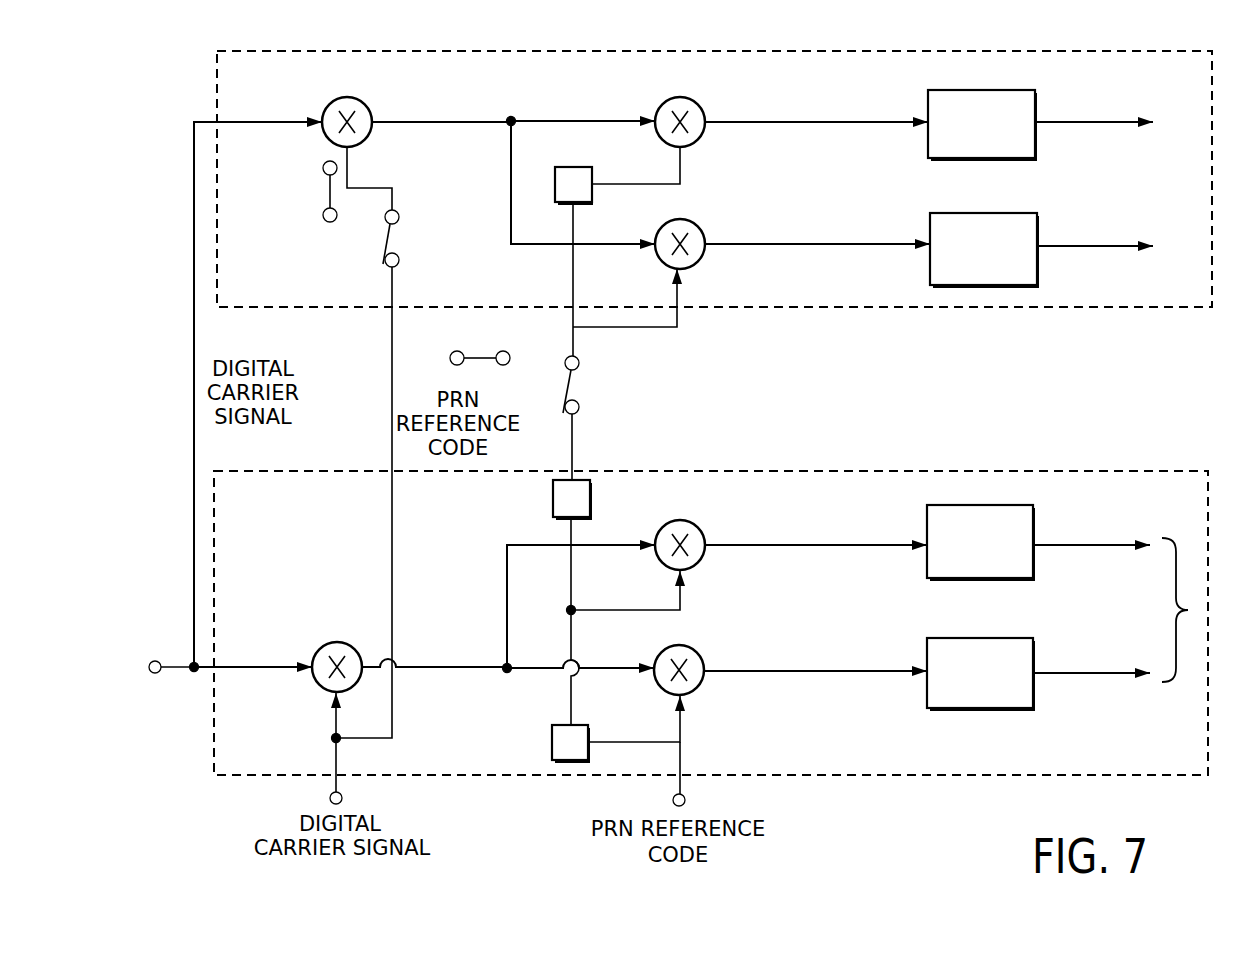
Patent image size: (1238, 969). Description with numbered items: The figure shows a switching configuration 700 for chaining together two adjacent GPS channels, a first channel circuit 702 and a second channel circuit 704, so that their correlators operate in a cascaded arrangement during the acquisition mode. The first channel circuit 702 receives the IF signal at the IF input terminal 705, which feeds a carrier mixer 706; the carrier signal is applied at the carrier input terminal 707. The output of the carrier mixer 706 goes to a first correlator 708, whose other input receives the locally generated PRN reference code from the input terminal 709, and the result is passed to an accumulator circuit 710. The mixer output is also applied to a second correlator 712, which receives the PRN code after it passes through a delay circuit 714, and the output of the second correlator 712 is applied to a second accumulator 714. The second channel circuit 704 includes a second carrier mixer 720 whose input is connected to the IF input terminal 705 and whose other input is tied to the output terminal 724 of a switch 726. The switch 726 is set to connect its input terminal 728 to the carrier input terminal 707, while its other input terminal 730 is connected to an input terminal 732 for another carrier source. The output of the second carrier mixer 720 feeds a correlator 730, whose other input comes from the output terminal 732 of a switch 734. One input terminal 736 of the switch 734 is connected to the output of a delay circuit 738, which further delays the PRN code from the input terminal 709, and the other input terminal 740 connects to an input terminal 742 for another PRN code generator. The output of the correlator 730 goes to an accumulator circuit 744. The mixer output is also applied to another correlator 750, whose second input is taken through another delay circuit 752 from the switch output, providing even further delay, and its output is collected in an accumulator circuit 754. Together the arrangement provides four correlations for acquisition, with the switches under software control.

The switching configuration 700 is at (133, 112).
The first channel circuit 702 is at (214, 560).
The second channel circuit 704 is at (217, 175).
The IF input terminal 705 is at (150, 673).
The carrier mixer 706 is at (338, 632).
The carrier input terminal 707 is at (342, 798).
The first correlator 708 is at (698, 655).
The PRN reference code input terminal 709 is at (685, 800).
The accumulator circuit 710 is at (1028, 669).
The second correlator 712 is at (699, 530).
The delay circuit / second accumulator 714 is at (1028, 538).
The second carrier mixer 720 is at (366, 109).
The switch output terminal 724 is at (399, 217).
The switch 726 is at (385, 244).
The switch input terminal 728 is at (399, 260).
The switch input terminal / correlator 730 is at (323, 168).
The carrier input terminal / switch output terminal 732 is at (323, 215).
The switch 734 is at (566, 390).
The switch input terminal 736 is at (579, 407).
The delay circuit 738 is at (591, 498).
The switch input terminal 740 is at (505, 351).
The PRN reference code input terminal 742 is at (457, 351).
The accumulator circuit 744 is at (1032, 246).
The correlator 750 is at (699, 107).
The delay circuit 752 is at (582, 167).
The accumulator circuit 754 is at (1030, 124).